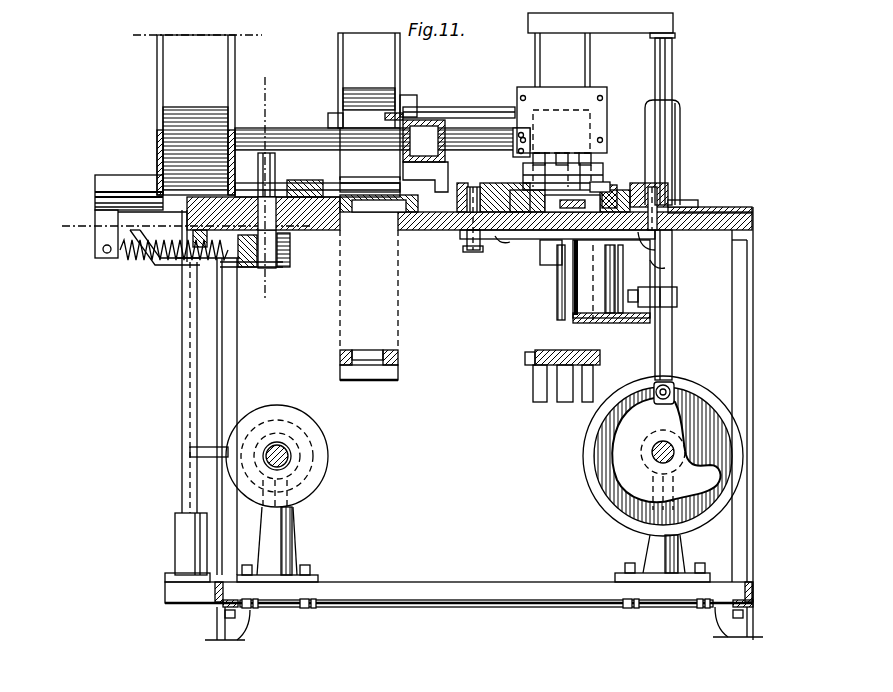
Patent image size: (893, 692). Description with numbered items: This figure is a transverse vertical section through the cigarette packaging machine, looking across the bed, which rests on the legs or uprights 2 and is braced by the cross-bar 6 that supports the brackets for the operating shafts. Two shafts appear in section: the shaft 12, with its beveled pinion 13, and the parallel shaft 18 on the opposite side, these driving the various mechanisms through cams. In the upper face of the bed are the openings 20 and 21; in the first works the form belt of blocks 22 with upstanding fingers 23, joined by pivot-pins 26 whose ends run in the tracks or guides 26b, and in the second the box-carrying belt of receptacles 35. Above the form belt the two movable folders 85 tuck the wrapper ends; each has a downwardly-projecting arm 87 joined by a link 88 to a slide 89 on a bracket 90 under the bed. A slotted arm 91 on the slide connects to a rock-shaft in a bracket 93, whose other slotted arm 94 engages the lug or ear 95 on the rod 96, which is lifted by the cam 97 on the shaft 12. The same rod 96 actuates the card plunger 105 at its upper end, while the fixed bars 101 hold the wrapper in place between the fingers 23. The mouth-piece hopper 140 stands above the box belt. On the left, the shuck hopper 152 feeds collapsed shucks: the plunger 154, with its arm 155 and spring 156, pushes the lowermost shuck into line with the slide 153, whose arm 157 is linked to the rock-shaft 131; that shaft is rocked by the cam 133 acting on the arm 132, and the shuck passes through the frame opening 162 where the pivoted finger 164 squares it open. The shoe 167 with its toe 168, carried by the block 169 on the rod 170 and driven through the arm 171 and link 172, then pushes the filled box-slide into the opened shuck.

The legs or uprights 2 is at (737, 370).
The cross-bar 6 is at (487, 584).
The shaft 12 is at (652, 455).
The beveled pinion 13 is at (432, 251).
The shaft 18 is at (283, 450).
The opening 20 is at (527, 246).
The opening 21 is at (375, 220).
The blocks 22 is at (537, 370).
The upstanding fingers 23 is at (533, 177).
The pivot-pins 26 is at (527, 362).
The tracks or guides 26b is at (613, 205).
The boxes or receptacles 35 is at (363, 363).
The folders 85 is at (522, 176).
The downwardly-projecting arm 87 is at (458, 233).
The link 88 is at (495, 238).
The slide 89 is at (560, 245).
The bracket or support 90 is at (542, 246).
The slotted arm 91 is at (570, 290).
The bracket 93 is at (612, 286).
The slotted arm 94 is at (652, 293).
The lug or ear 95 is at (677, 298).
The rod 96 is at (660, 88).
The cam 97 is at (728, 432).
The fixed bars 101 is at (553, 152).
The slide or plunger 105 is at (600, 50).
The rock-shaft 131 is at (183, 350).
The arm or finger 132 is at (197, 447).
The cam 133 is at (318, 468).
The mouth-piece hopper 140 is at (364, 106).
The hopper 152 is at (178, 99).
The slide 153 is at (285, 268).
The plunger 154 is at (110, 198).
The downwardly-projecting arm 155 is at (116, 232).
The spring 156 is at (145, 256).
The downwardly-extending arm 157 is at (258, 258).
The opening 162 is at (281, 188).
The finger 164 is at (258, 163).
The shoe 167 is at (438, 176).
The toe 168 is at (433, 165).
The block 169 is at (437, 143).
The rod 170 is at (266, 137).
The arm 171 is at (413, 117).
The link 172 is at (443, 110).